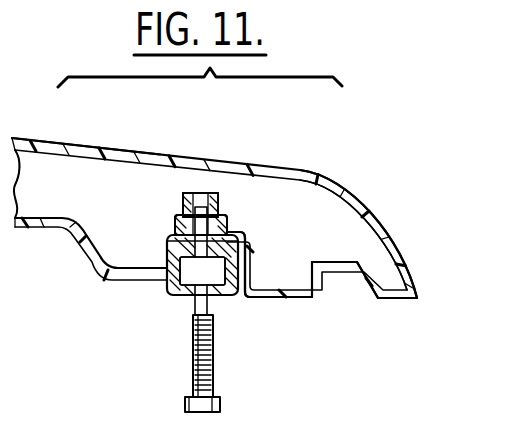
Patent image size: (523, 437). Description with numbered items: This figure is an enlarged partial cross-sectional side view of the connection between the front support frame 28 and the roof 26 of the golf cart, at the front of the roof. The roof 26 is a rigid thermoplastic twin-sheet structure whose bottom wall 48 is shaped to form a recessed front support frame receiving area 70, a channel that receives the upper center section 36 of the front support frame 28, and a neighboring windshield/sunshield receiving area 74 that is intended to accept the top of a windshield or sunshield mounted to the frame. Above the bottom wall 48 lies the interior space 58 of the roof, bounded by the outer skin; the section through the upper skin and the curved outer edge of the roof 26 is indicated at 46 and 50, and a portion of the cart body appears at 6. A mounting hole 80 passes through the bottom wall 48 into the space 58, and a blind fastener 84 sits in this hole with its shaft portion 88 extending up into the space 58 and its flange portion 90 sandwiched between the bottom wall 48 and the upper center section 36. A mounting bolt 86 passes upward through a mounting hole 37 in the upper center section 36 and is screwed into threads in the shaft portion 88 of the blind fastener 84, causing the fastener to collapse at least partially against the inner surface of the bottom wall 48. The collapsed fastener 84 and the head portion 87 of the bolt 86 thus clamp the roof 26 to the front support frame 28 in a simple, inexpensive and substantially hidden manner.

The vehicle body panel 6 is at (10, 223).
The roof 26 is at (390, 232).
The front support frame 28 is at (245, 270).
The upper center section 36 is at (170, 295).
The mounting hole 37 is at (208, 295).
The outer skin 46 is at (143, 148).
The bottom wall 48 is at (53, 228).
The panel inner surface 50 is at (353, 190).
The space 58 is at (315, 198).
The front support frame receiving area 70 is at (247, 242).
The windshield/sunshield receiving area 74 is at (345, 265).
The mounting hole 80 is at (176, 232).
The blind fastener 84 is at (222, 198).
The mounting bolt 86 is at (213, 368).
The head portion 87 is at (220, 410).
The shaft portion 88 is at (180, 202).
The flange portion 90 is at (170, 240).